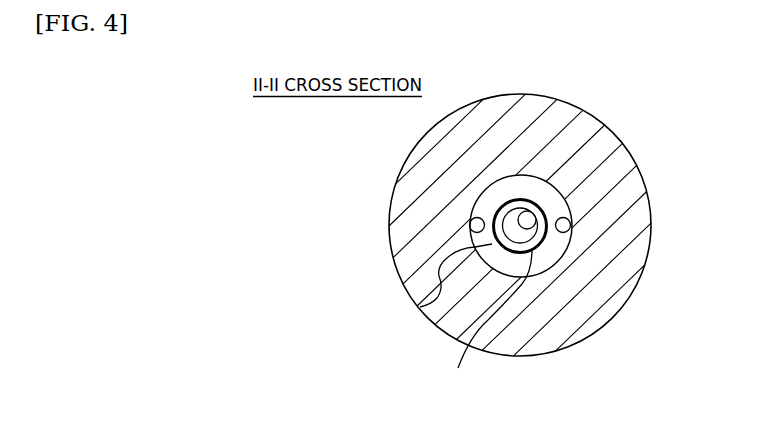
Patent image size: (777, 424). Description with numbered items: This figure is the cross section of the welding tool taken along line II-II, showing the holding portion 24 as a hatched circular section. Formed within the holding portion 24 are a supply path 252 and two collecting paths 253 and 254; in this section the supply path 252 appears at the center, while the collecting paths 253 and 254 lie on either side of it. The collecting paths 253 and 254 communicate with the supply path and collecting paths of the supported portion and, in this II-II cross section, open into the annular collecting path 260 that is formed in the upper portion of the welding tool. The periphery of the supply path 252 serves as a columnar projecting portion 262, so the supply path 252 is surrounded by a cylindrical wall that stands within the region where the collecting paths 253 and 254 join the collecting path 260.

The holding portion 24 is at (611, 152).
The supply path 252 is at (521, 212).
The collecting path 253 is at (469, 224).
The collecting path 254 is at (571, 225).
The annular collecting path 260 is at (420, 307).
The columnar projecting portion 262 is at (486, 321).